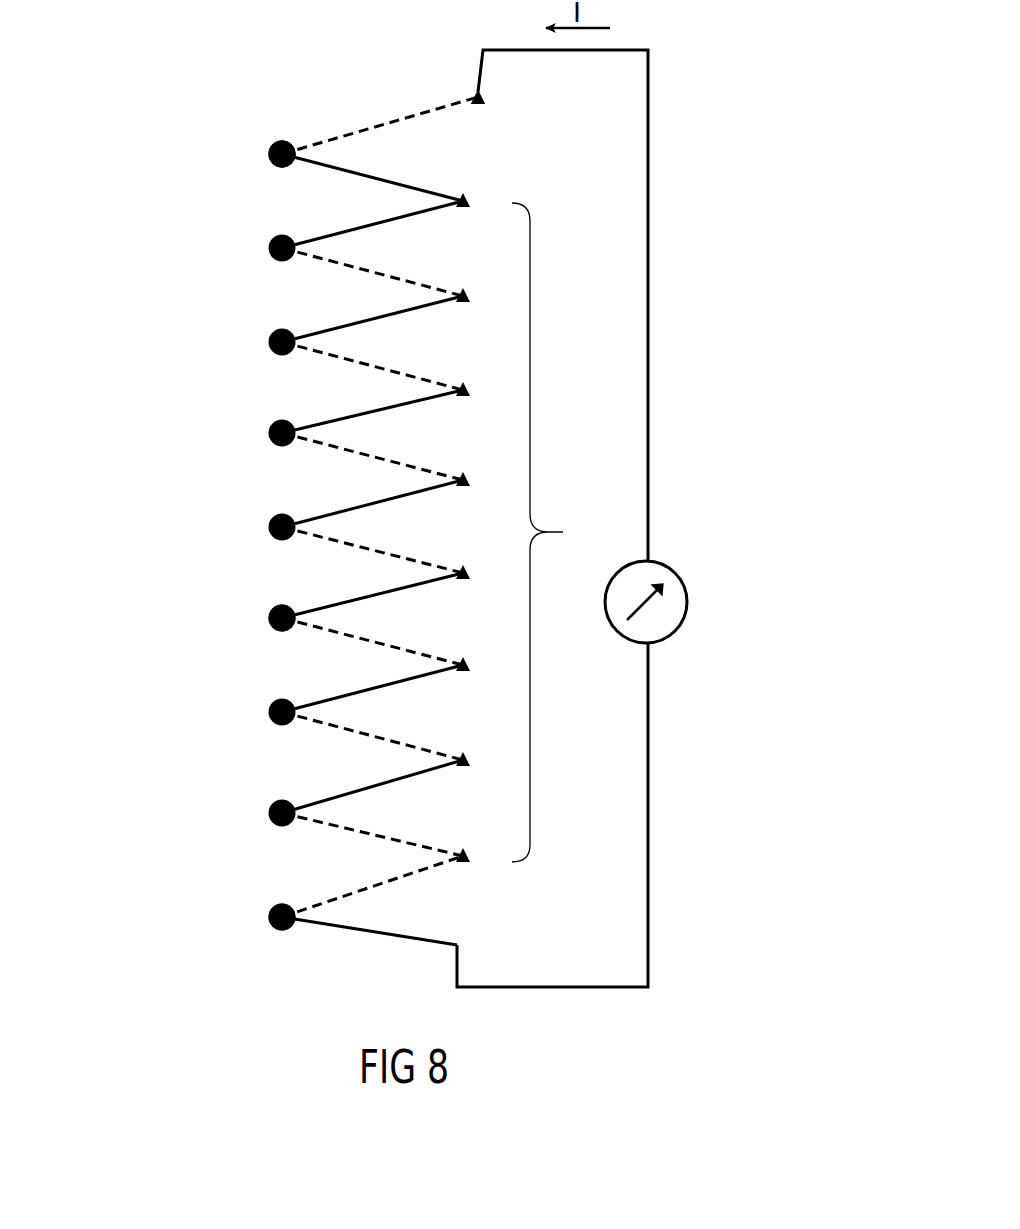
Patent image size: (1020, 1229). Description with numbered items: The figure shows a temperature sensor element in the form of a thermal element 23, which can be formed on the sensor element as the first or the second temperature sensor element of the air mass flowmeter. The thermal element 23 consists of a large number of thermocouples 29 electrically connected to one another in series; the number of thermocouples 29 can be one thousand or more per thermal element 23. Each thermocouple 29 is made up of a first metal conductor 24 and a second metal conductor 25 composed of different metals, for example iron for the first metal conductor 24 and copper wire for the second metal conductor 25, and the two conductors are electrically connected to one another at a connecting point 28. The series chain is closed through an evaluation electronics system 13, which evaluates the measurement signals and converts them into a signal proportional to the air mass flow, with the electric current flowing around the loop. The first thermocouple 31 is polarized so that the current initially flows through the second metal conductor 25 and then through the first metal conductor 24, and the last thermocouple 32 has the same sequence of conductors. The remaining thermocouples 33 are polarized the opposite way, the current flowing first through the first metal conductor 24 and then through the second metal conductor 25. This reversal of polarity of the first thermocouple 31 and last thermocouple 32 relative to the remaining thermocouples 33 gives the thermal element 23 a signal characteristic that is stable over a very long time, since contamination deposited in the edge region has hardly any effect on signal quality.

The evaluation electronics system 13 is at (675, 570).
The thermal element 23 is at (237, 107).
The first metal conductor 24 is at (420, 190).
The second metal conductor 25 is at (412, 113).
The connecting point 28 is at (268, 527).
The thermocouple 29 is at (255, 623).
The first thermocouple 31 is at (287, 177).
The last thermocouple 32 is at (303, 893).
The remaining thermocouples 33 is at (526, 476).